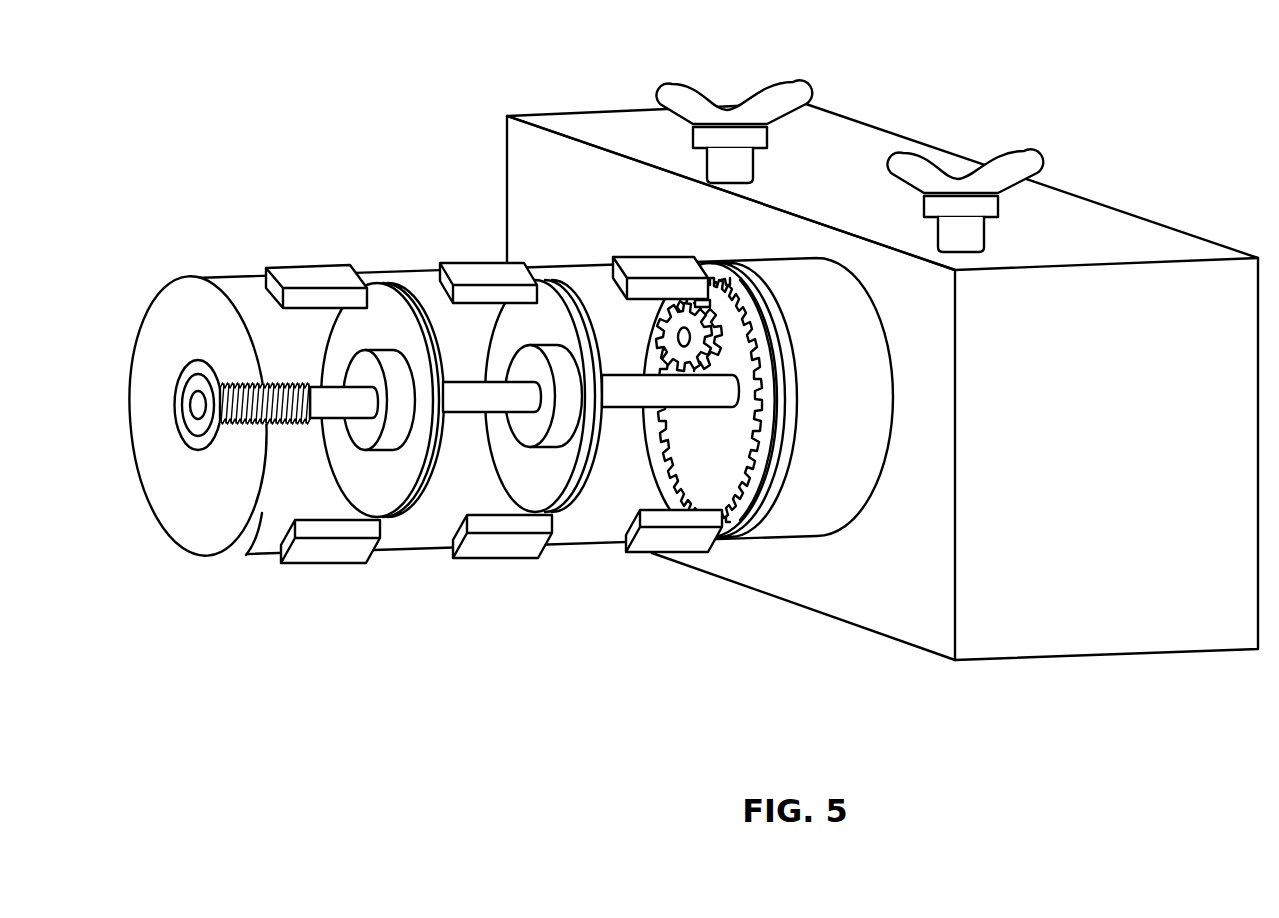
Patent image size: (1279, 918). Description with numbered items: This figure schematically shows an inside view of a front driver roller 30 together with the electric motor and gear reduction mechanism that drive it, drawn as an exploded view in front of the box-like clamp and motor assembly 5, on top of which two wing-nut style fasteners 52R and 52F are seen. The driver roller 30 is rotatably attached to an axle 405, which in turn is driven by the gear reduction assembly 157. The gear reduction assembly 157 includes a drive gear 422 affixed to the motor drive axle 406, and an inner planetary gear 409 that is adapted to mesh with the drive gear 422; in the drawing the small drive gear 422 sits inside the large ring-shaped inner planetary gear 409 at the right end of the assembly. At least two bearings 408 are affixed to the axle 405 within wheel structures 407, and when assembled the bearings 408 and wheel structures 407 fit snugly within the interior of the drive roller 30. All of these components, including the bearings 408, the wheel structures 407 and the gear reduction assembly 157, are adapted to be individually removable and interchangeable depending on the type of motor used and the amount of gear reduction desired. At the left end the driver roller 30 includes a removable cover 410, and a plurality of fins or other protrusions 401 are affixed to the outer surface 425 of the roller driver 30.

The clamp and motor assembly 5 is at (1060, 628).
The driver roller 30 is at (252, 557).
The rear wing nut 52R is at (787, 92).
The front wing nut 52F is at (1020, 160).
The gear reduction assembly 157 is at (752, 528).
The fins or other protrusions 401 is at (300, 272).
The axle 405 is at (458, 395).
The motor drive axle 406 is at (687, 307).
The wheel structures 407 is at (415, 502).
The bearings 408 is at (562, 413).
The inner planetary gear 409 is at (723, 543).
The removable cover 410 is at (170, 508).
The drive gear 422 is at (705, 310).
The outer surface 425 is at (250, 556).